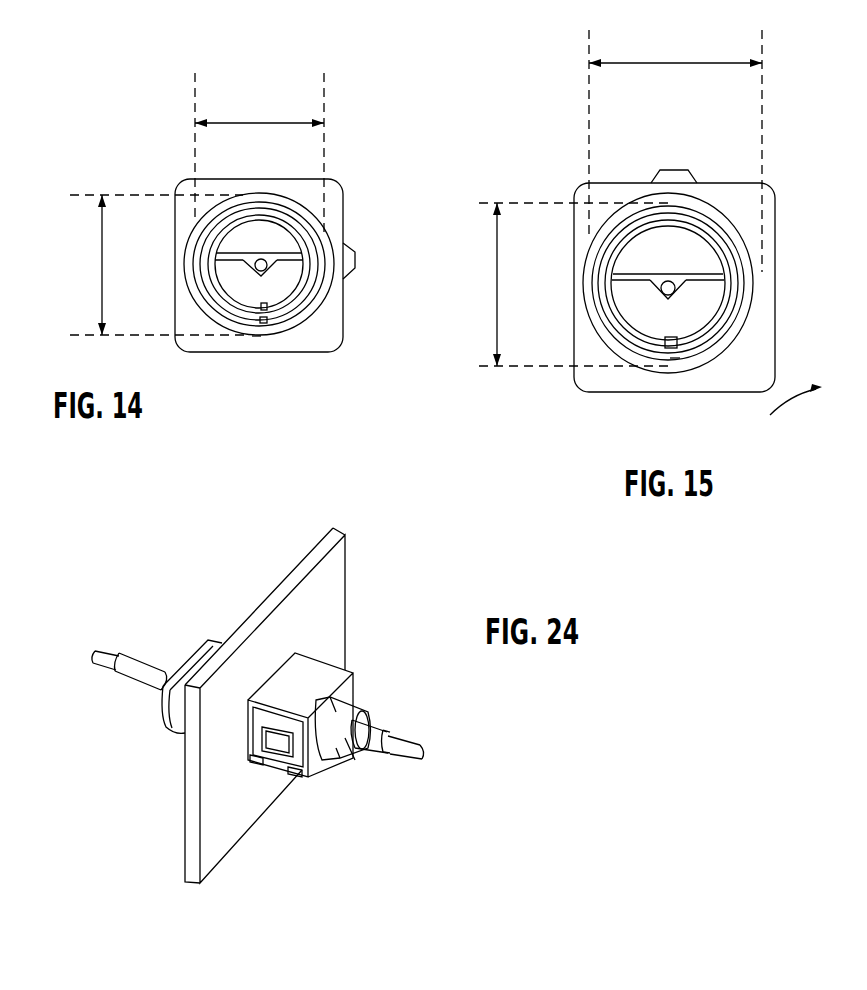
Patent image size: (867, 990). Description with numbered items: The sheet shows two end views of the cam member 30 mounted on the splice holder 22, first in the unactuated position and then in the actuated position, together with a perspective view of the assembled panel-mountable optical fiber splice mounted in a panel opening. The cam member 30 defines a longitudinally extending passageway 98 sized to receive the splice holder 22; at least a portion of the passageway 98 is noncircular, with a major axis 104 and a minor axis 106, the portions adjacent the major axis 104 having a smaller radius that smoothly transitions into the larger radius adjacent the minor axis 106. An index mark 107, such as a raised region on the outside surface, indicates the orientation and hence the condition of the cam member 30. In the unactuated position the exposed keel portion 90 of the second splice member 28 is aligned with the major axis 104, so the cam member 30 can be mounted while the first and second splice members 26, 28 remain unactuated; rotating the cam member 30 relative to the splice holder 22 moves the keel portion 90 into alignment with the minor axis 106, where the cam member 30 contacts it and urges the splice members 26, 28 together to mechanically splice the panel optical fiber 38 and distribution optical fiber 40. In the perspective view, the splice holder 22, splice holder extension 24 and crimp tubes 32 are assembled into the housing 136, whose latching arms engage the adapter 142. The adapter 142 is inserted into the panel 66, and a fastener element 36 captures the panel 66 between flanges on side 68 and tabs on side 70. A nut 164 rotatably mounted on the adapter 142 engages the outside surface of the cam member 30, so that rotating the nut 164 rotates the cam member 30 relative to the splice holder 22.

In FIG. 14, the splice holder 22 is at (304, 291).
In FIG. 15, the splice holder 22 is at (715, 342).
In FIG. 24, the splice holder 22 is at (365, 747).
In FIG. 24, the splice holder extension 24 is at (130, 655).
In FIG. 14, the first splice member 26 is at (264, 223).
In FIG. 15, the first splice member 26 is at (695, 242).
In FIG. 14, the second splice member 28 is at (249, 291).
In FIG. 15, the second splice member 28 is at (651, 316).
In FIG. 14, the cam member 30 is at (365, 157).
In FIG. 15, the cam member 30 is at (794, 158).
In FIG. 24, the crimp tubes 32 is at (97, 667).
In FIG. 24, the fastener element 36 is at (270, 770).
In FIG. 14, the panel optical fiber 38 is at (206, 242).
In FIG. 15, the panel optical fiber 38 is at (614, 258).
In FIG. 14, the distribution optical fiber 40 is at (254, 265).
In FIG. 15, the distribution optical fiber 40 is at (661, 289).
In FIG. 24, the panel 66 is at (352, 509).
In FIG. 24, the side of the panel 68 is at (185, 830).
In FIG. 24, the side of the panel 70 is at (218, 837).
In FIG. 14, the exposed keel portion 90 is at (268, 318).
In FIG. 15, the exposed keel portion 90 is at (657, 340).
In FIG. 14, the passageway 98 is at (295, 310).
In FIG. 15, the passageway 98 is at (748, 298).
In FIG. 14, the major axis 104 is at (98, 250).
In FIG. 15, the major axis 104 is at (659, 61).
In FIG. 14, the minor axis 106 is at (259, 122).
In FIG. 15, the minor axis 106 is at (497, 283).
In FIG. 14, the index mark 107 is at (355, 257).
In FIG. 15, the index mark 107 is at (673, 168).
In FIG. 24, the housing 136 is at (217, 642).
In FIG. 24, the adapter 142 is at (308, 660).
In FIG. 24, the nut 164 is at (363, 712).